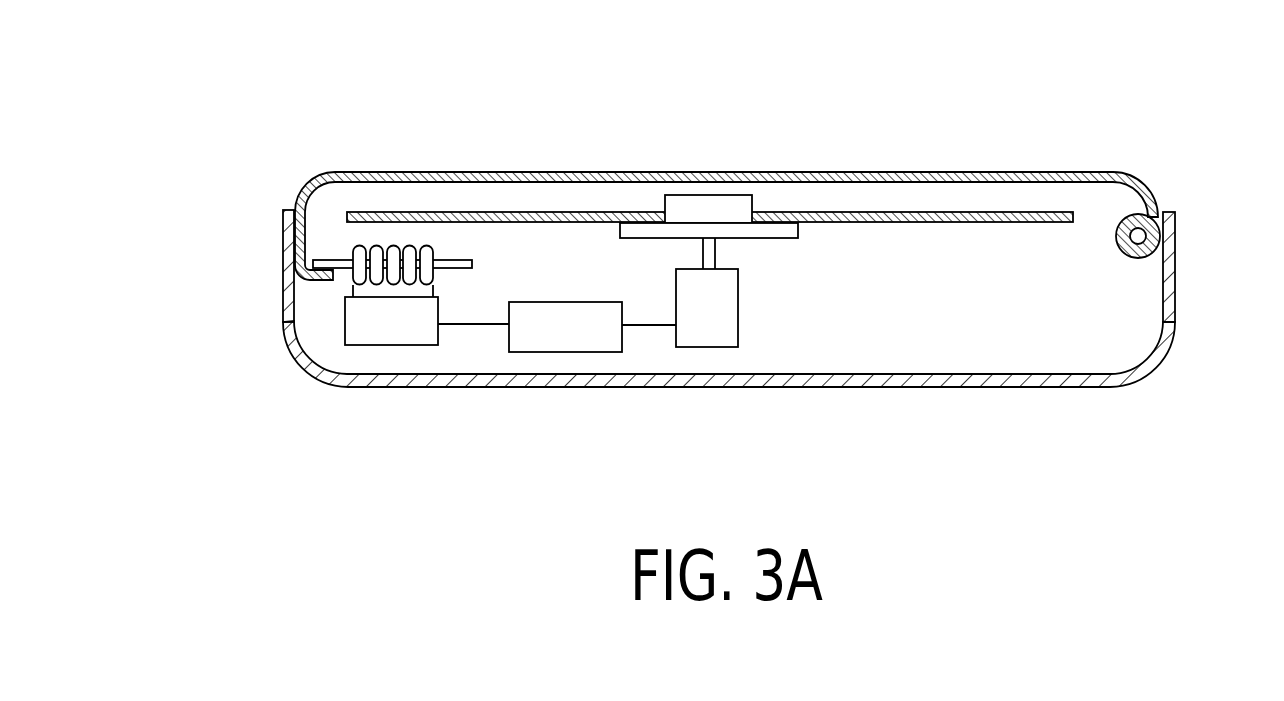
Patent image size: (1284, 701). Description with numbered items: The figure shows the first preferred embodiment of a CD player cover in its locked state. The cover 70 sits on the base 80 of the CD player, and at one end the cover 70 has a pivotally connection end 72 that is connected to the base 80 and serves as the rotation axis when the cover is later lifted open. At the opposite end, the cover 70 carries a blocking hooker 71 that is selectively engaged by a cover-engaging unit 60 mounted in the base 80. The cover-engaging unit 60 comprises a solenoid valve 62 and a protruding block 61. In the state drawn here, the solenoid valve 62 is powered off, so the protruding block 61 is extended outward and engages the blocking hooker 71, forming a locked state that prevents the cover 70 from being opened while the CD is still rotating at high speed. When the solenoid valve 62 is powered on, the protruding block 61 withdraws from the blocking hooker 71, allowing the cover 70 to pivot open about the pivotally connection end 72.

The cover-engaging unit 60 is at (350, 372).
The protruding block 61 is at (343, 277).
The solenoid valve 62 is at (385, 332).
The cover 70 is at (853, 156).
The blocking hooker 71 is at (282, 243).
The pivotally connection end 72 is at (1177, 232).
The base 80 is at (703, 387).